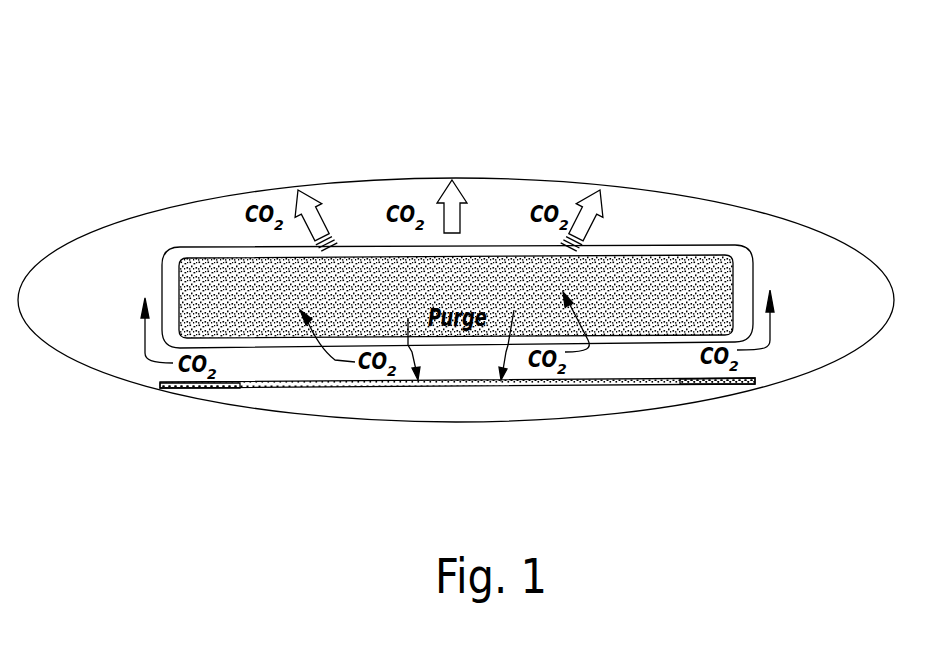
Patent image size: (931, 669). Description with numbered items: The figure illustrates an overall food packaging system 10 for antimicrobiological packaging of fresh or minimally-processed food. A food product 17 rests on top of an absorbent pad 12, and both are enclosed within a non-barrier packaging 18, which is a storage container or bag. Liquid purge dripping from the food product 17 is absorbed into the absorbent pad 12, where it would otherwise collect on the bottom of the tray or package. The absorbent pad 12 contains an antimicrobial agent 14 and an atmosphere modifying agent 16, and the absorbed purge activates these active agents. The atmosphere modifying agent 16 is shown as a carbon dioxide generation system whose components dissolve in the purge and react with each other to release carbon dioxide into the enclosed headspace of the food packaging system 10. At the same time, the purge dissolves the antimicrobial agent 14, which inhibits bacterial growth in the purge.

The food packaging system 10 is at (210, 127).
The absorbent pad 12 is at (473, 388).
The antimicrobial agent 14 is at (697, 383).
The atmosphere modifying agent 16 is at (218, 388).
The food product 17 is at (680, 278).
The non-barrier packaging 18 is at (666, 188).